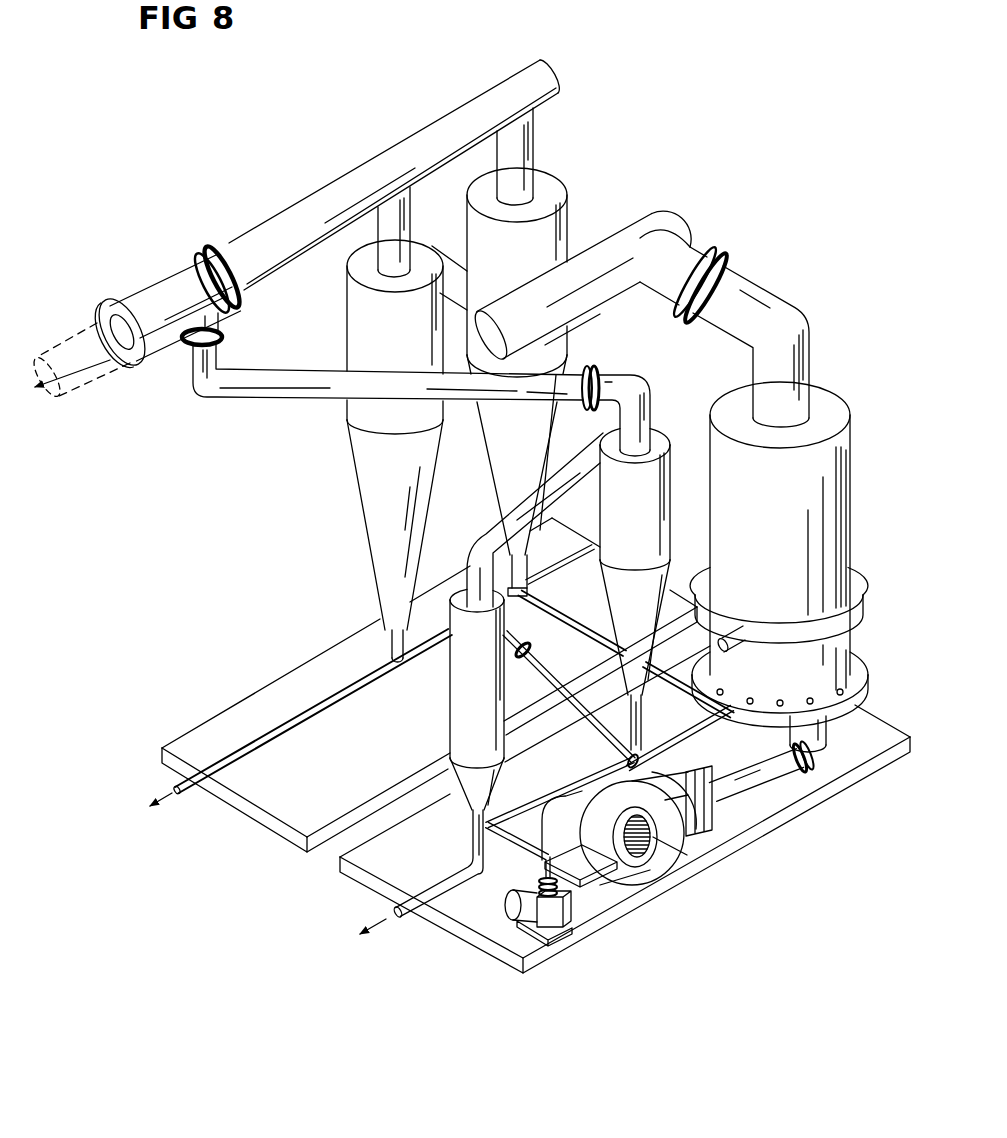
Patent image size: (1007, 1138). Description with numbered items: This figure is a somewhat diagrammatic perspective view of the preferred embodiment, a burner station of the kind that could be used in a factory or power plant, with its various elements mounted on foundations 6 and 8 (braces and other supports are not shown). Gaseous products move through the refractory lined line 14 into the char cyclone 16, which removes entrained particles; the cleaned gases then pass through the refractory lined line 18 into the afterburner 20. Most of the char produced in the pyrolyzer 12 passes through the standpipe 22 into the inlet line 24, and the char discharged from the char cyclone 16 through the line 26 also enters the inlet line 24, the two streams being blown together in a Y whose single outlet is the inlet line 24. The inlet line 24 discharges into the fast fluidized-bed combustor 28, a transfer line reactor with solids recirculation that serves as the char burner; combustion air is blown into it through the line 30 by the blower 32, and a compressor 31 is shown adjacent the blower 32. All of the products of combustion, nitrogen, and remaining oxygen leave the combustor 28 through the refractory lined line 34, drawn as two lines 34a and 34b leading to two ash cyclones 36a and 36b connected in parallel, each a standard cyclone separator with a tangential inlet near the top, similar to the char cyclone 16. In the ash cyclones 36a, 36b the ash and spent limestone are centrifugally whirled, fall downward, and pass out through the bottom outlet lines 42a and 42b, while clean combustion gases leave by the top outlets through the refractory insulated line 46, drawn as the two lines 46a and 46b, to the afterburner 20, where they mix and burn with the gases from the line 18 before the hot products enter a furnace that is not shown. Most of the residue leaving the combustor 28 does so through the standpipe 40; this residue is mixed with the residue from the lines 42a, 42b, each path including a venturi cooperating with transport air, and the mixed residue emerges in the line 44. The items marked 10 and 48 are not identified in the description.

The foundation 6 is at (497, 957).
The foundation 8 is at (277, 825).
The outlet pipe of cyclone 12 10 is at (450, 870).
The pyrolyzer 12 is at (467, 692).
The refractory lined line 14 is at (483, 547).
The char cyclone 16 is at (640, 520).
The refractory lined line 18 is at (203, 393).
The afterburner 20 is at (167, 283).
The standpipe 22 is at (600, 733).
The inlet line 24 is at (643, 763).
The line 26 is at (643, 718).
The fast fluidized-bed combustor 28 is at (833, 552).
The line 30 is at (777, 773).
The compressor 31 is at (558, 915).
The blower 32 is at (650, 843).
The refractory lined line 34 is at (753, 287).
The refractory lined line 34a is at (597, 217).
The refractory lined line 34b is at (465, 283).
The ash cyclone 36a is at (537, 183).
The ash cyclone 36b is at (353, 280).
The standpipe 40 is at (787, 748).
The line 42a is at (593, 547).
The line 42b is at (393, 643).
The line 44 is at (233, 763).
The refractory insulated line 46 is at (453, 113).
The refractory insulated line 46a is at (520, 147).
The refractory insulated line 46b is at (368, 272).
The extension of inlet pipe (phantom) 48 is at (70, 337).